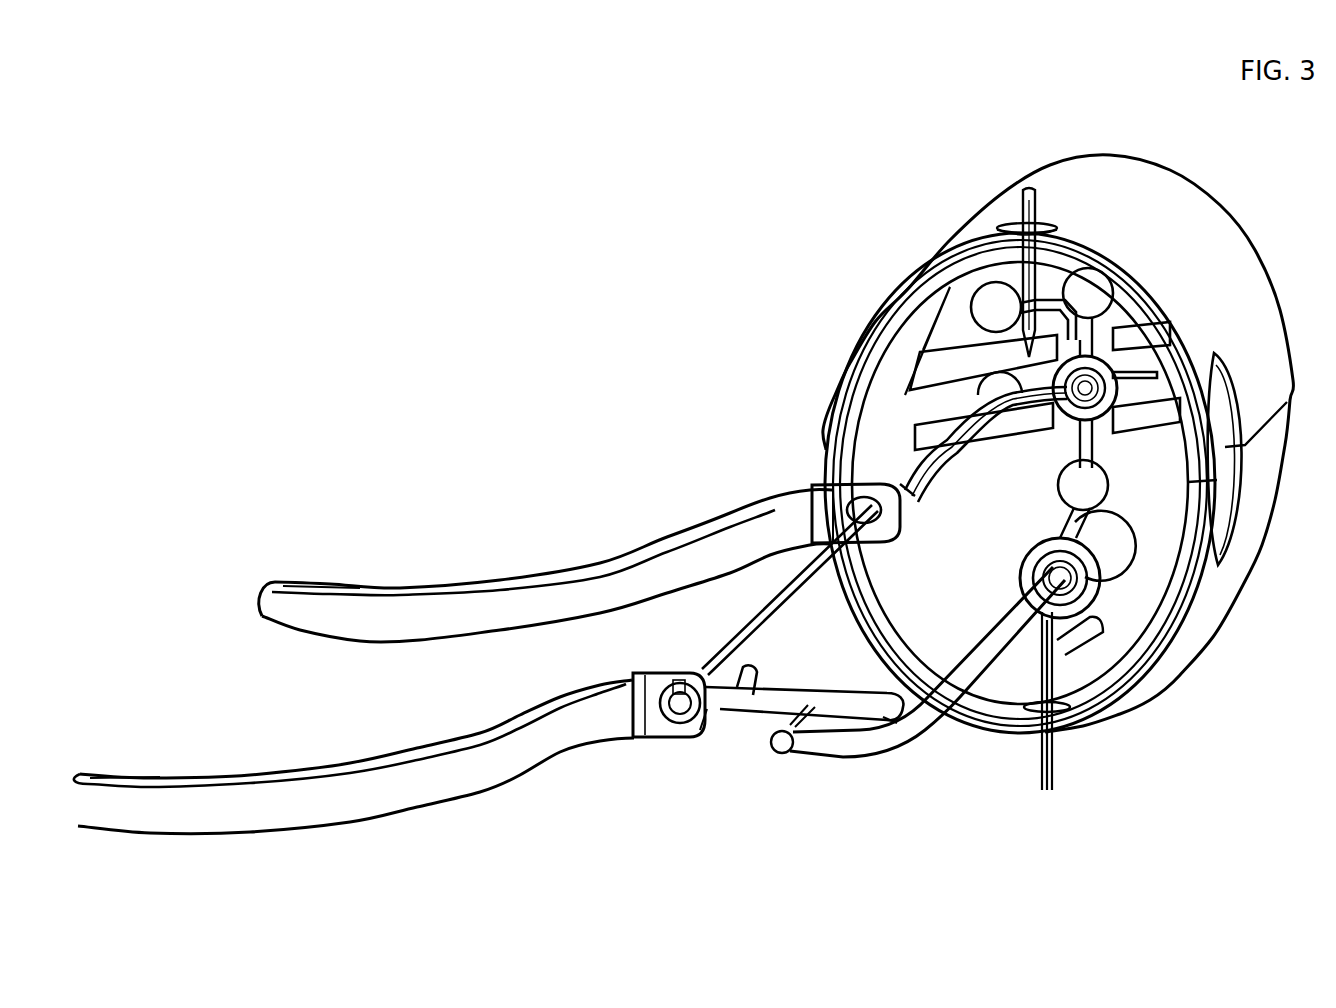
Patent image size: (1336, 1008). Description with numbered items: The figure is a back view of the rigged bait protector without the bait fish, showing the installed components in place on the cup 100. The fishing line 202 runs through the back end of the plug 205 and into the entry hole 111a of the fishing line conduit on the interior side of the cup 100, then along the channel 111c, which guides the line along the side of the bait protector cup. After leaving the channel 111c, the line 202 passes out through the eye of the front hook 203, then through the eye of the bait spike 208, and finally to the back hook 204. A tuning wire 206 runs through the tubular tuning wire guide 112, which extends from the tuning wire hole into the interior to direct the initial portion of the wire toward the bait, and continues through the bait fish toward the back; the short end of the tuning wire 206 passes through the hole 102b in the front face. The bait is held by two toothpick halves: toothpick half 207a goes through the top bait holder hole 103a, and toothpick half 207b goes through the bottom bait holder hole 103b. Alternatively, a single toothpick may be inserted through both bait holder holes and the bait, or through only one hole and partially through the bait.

The cup 100 is at (1130, 120).
The top bait holder hole 103a is at (1050, 226).
The bottom bait holder hole 103b is at (1017, 723).
The toothpick half 207a is at (1021, 200).
The toothpick half 207b is at (1056, 775).
The plug 205 is at (1093, 376).
The tuning wire guide 112 is at (1110, 553).
The hole in the front face 102b is at (1093, 643).
The entry hole 111a is at (880, 478).
The channel 111c is at (888, 482).
The line 202 is at (950, 463).
The front hook 203 is at (353, 620).
The back hook 204 is at (437, 790).
The tuning wire 206 is at (943, 700).
The bait spike 208 is at (760, 702).